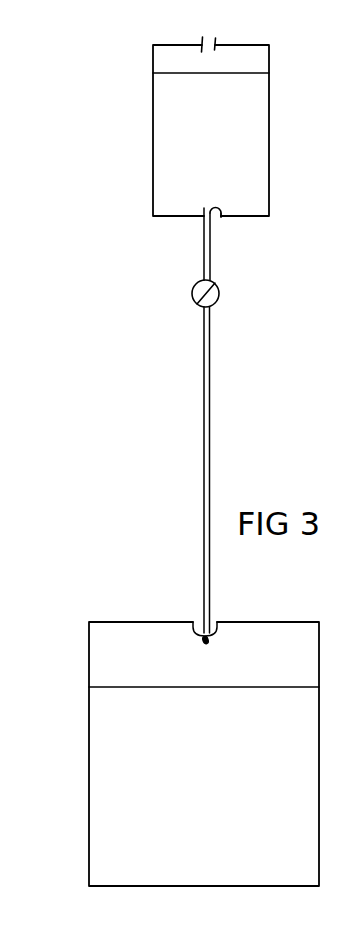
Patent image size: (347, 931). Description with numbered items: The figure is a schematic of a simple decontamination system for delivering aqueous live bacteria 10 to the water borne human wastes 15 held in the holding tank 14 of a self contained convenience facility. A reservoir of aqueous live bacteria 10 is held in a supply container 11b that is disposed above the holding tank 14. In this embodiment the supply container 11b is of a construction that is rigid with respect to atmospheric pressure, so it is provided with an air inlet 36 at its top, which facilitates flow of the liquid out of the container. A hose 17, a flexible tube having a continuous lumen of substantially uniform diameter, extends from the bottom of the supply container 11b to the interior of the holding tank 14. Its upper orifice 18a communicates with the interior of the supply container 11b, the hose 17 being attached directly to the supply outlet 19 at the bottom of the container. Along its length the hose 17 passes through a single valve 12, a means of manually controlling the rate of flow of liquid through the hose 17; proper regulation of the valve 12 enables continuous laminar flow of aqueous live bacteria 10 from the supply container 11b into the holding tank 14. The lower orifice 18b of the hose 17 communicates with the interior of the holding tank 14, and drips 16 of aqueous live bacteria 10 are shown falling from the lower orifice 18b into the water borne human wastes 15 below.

The aqueous live bacteria 10 is at (170, 138).
The supply container 11b is at (153, 58).
The air inlet 36 is at (204, 35).
The hose 17 is at (204, 447).
The upper orifice 18a is at (204, 219).
The supply outlet 19 is at (219, 218).
The valve 12 is at (192, 294).
The holding tank 14 is at (89, 653).
The water borne human wastes 15 is at (106, 773).
The lower orifice 18b is at (216, 621).
The drips 16 is at (194, 621).